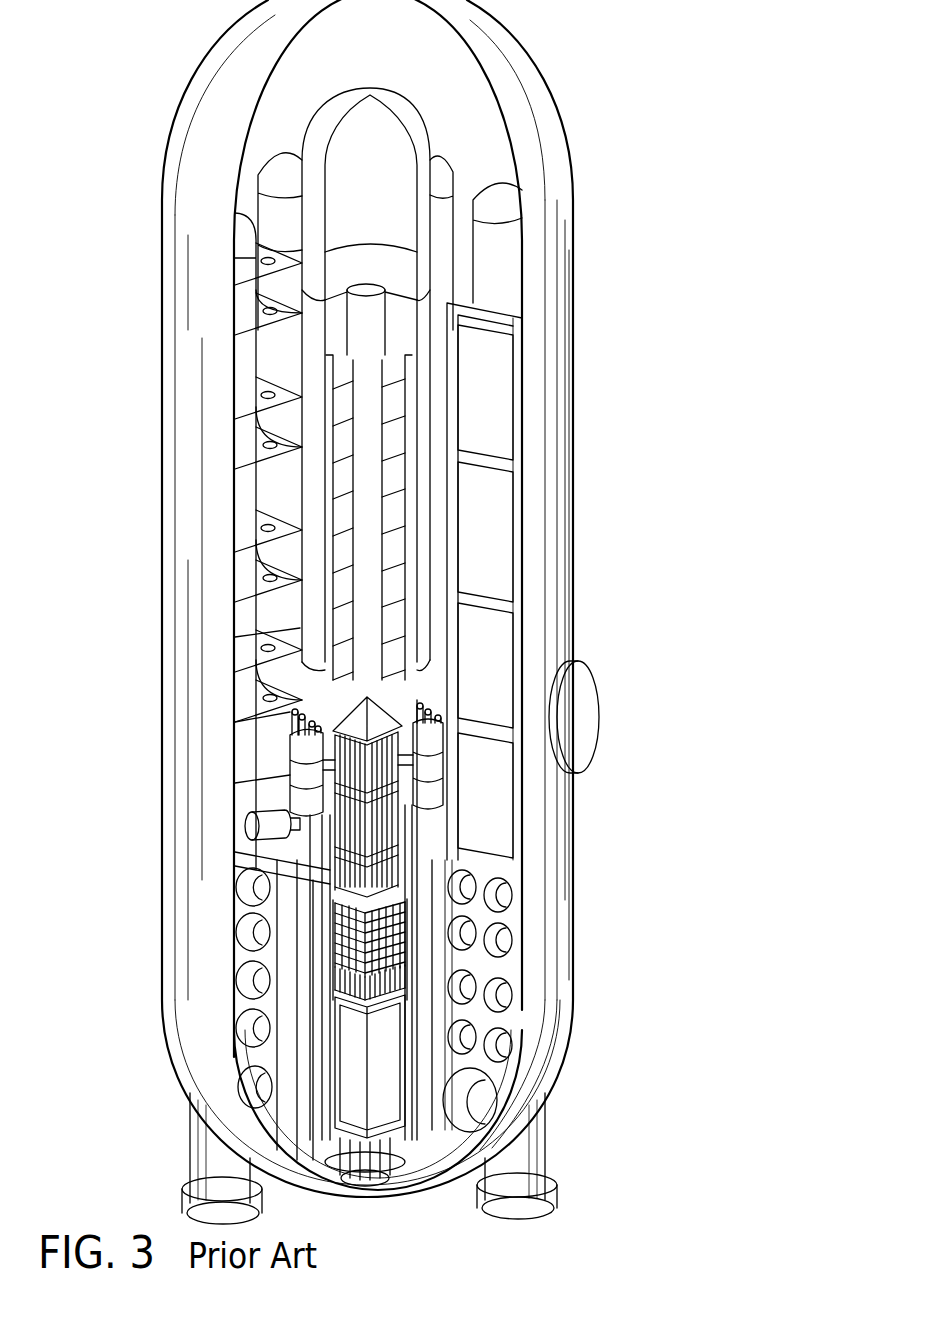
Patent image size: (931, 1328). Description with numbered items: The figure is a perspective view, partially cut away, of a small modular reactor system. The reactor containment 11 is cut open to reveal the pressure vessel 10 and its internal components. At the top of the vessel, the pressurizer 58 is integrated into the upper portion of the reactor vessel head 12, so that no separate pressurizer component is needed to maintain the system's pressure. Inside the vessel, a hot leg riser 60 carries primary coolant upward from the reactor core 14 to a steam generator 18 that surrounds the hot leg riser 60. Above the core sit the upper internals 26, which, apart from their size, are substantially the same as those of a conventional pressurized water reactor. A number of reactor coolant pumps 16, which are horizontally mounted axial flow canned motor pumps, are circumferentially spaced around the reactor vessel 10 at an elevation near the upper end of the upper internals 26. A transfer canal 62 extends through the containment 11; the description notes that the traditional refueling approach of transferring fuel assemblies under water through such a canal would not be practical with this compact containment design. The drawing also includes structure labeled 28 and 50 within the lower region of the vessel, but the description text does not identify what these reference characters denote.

The pressure vessel 10 is at (414, 935).
The reactor containment 11 is at (575, 627).
The reactor vessel head 12 is at (427, 408).
The reactor core 14 is at (383, 1065).
The reactor coolant pumps 16 is at (245, 830).
The steam generator 18 is at (398, 507).
The upper internals 26 is at (340, 935).
The lower core support plate 28 is at (395, 987).
The upper internals 50 is at (410, 883).
The pressurizer 58 is at (393, 216).
The hot leg riser 60 is at (368, 548).
The transfer canal 62 is at (585, 720).